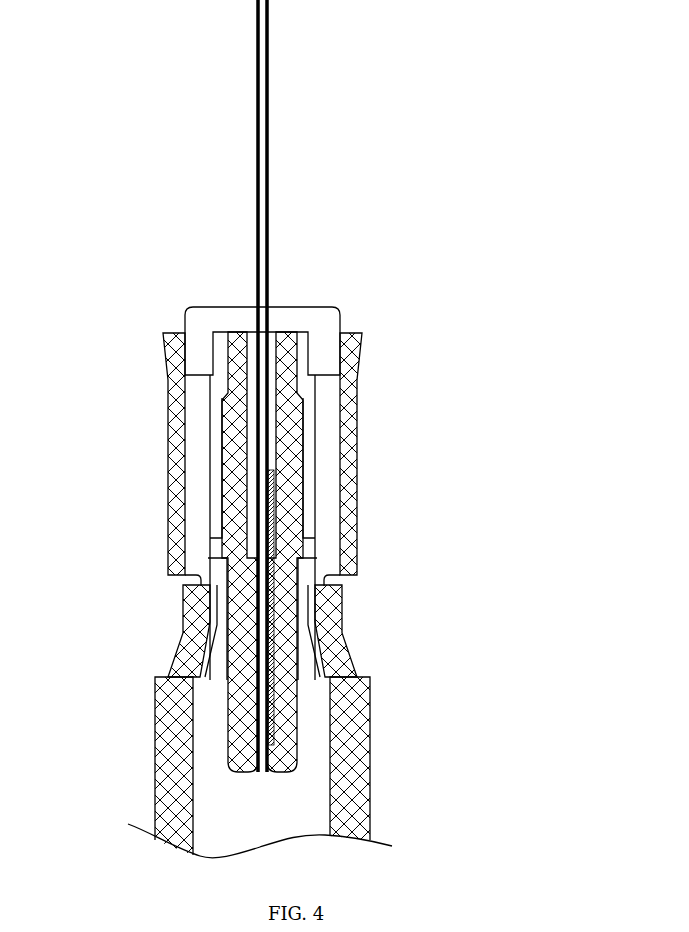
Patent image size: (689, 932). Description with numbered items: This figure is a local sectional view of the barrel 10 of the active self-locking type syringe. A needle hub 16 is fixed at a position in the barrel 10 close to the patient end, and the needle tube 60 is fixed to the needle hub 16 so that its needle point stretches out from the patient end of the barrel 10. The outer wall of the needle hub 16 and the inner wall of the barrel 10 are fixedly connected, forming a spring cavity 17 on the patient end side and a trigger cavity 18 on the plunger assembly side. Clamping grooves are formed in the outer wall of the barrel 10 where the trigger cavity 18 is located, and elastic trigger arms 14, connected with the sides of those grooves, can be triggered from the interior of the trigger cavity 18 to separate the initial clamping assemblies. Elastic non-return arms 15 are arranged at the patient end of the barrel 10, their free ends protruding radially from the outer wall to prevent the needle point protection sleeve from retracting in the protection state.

The barrel 10 is at (355, 760).
The trigger arms 14 is at (322, 614).
The non-return arms 15 is at (362, 337).
The needle hub 16 is at (283, 520).
The spring cavity 17 is at (217, 450).
The trigger cavity 18 is at (218, 683).
The needle tube 60 is at (254, 200).